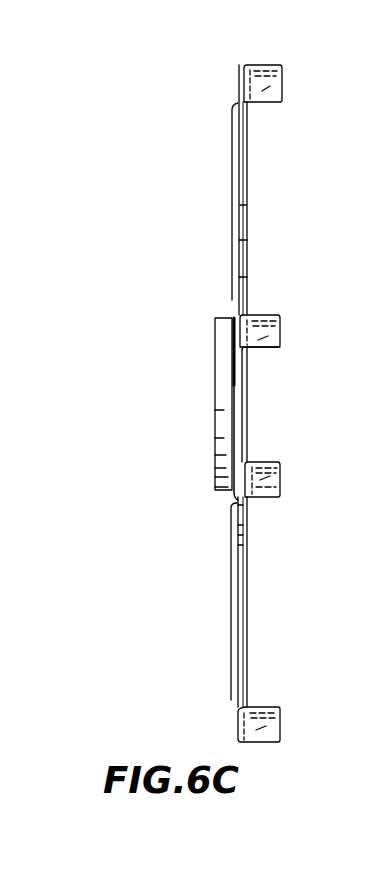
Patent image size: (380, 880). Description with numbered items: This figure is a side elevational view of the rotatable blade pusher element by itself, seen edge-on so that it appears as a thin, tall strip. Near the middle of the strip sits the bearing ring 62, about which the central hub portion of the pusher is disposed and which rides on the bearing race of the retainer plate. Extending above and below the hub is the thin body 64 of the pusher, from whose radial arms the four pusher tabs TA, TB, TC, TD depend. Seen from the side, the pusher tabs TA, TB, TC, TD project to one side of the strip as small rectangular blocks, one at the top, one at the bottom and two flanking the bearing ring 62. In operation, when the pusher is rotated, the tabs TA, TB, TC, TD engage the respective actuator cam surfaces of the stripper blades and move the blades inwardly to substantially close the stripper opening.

The mounting strip 64 is at (232, 205).
The bearing ring 62 is at (215, 320).
The pusher tab TA is at (272, 89).
The pusher tab TB is at (267, 332).
The pusher tab TC is at (266, 728).
The pusher tab TD is at (268, 479).